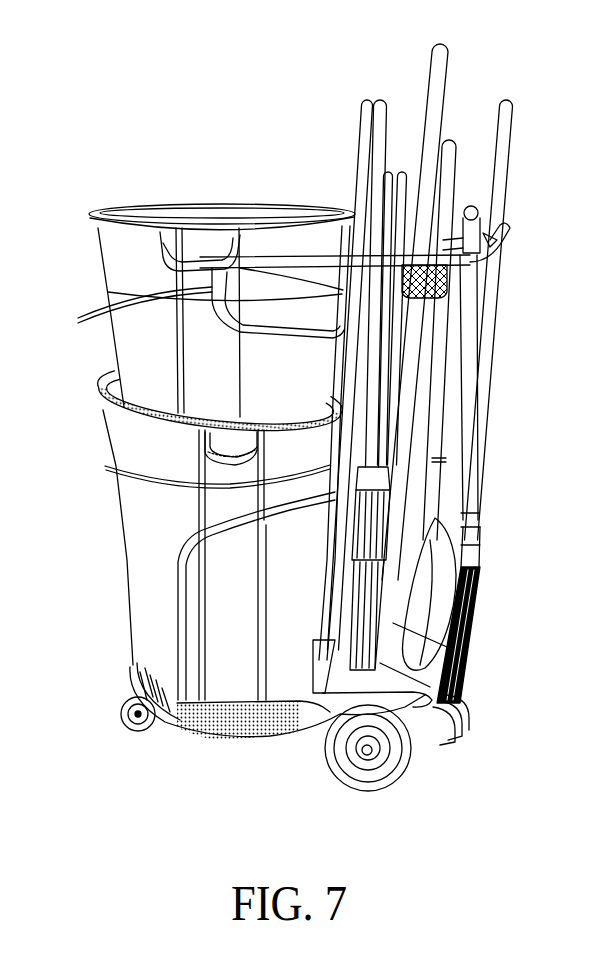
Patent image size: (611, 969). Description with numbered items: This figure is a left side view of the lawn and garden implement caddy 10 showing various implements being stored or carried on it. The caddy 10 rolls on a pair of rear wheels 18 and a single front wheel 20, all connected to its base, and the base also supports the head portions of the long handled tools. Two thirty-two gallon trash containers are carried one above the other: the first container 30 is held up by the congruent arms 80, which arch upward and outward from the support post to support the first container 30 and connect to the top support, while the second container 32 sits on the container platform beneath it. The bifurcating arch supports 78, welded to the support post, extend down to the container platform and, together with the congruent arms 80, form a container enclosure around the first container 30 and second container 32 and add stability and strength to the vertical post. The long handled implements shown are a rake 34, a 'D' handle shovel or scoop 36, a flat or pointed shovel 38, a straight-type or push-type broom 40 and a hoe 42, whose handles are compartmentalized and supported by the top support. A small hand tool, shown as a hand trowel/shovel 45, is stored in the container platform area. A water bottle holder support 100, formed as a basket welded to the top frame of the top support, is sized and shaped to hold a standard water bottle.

The caddy 10 is at (213, 166).
The rear wheels 18 is at (400, 762).
The front wheel 20 is at (125, 720).
The first container 30 is at (120, 263).
The second container 32 is at (122, 448).
The rake 34 is at (473, 507).
The 'D' handle shovel or scoop 36 is at (443, 593).
The flat or pointed shovel 38 is at (462, 668).
The straight-type or push-type broom 40 is at (455, 703).
The hoe 42 is at (293, 720).
The hand trowel/shovel 45 is at (413, 235).
The arch supports 78 is at (168, 580).
The congruent arms 80 is at (140, 297).
The water bottle holder support 100 is at (448, 283).